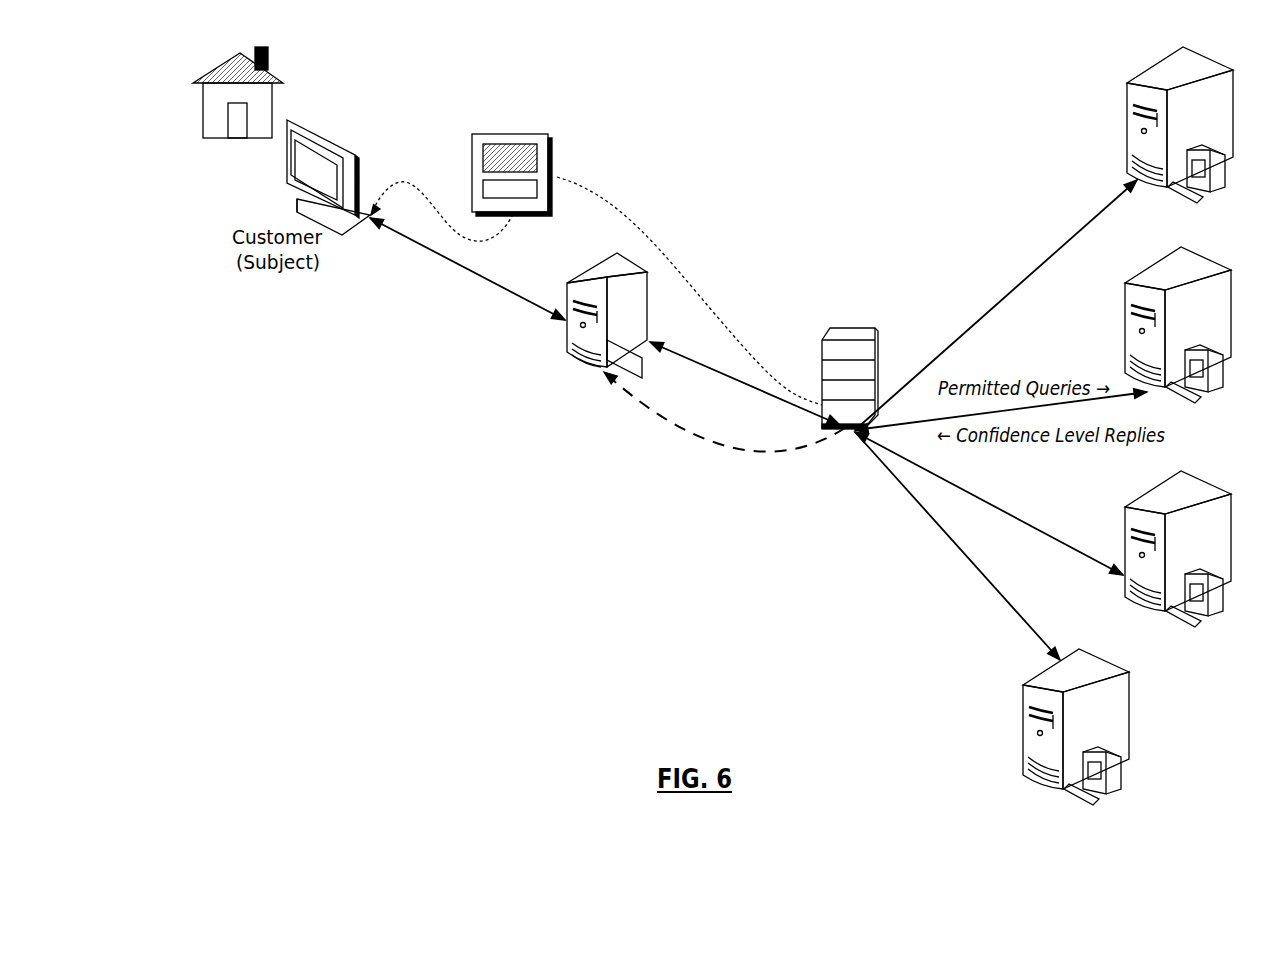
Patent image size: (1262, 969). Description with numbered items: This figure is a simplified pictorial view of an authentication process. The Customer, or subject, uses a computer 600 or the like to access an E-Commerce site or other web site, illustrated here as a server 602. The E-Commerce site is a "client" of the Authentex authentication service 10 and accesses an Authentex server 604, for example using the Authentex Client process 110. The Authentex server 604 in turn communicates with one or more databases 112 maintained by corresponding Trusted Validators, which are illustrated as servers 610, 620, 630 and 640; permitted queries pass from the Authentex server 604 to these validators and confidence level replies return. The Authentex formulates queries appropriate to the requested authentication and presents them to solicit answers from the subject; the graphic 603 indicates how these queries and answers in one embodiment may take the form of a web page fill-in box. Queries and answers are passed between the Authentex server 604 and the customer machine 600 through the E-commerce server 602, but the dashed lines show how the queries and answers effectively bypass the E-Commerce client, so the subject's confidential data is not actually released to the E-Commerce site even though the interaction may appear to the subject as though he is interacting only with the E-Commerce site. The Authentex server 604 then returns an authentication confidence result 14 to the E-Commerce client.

The customer computer 600 is at (323, 130).
The E-Commerce server 602 is at (597, 265).
The web page fill-in box graphic 603 is at (550, 146).
The Authentex server 604 is at (828, 327).
The trusted validator server 610 is at (1140, 73).
The trusted validator server 620 is at (1155, 267).
The trusted validator server 630 is at (1160, 487).
The trusted validator server 640 is at (1076, 714).
The authentication confidence result 14 is at (706, 430).
The Authentex authentication service 10 is at (855, 348).
The Authentex Client process 110 is at (548, 331).
The trusted validator databases 112 is at (1081, 426).